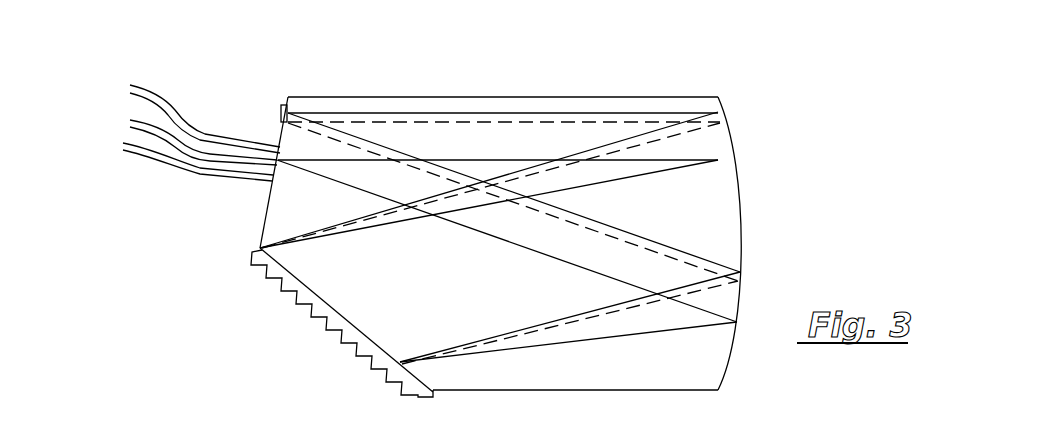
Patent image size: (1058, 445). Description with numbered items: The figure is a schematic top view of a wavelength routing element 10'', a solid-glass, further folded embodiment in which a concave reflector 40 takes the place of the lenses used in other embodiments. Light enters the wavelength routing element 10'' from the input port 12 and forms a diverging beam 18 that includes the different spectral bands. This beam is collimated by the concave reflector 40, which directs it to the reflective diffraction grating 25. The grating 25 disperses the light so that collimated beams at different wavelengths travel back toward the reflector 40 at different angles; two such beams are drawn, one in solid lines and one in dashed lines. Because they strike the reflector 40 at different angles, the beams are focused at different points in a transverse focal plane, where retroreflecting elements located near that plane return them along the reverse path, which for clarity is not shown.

The wavelength routing element 10'' is at (476, 273).
The input port 12 is at (277, 162).
The diverging beam 18 is at (303, 152).
The reflective diffraction grating 25 is at (340, 330).
The concave reflector 40 is at (742, 238).